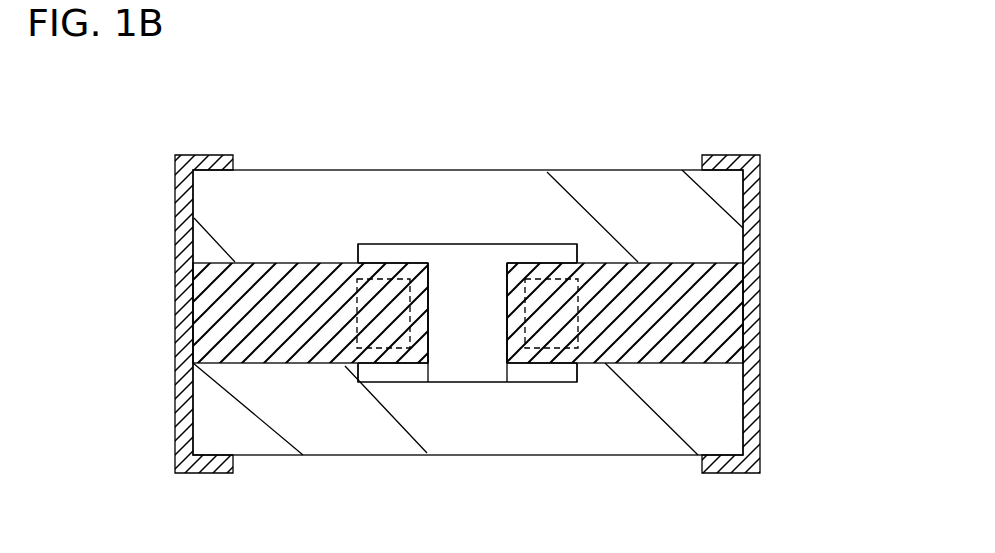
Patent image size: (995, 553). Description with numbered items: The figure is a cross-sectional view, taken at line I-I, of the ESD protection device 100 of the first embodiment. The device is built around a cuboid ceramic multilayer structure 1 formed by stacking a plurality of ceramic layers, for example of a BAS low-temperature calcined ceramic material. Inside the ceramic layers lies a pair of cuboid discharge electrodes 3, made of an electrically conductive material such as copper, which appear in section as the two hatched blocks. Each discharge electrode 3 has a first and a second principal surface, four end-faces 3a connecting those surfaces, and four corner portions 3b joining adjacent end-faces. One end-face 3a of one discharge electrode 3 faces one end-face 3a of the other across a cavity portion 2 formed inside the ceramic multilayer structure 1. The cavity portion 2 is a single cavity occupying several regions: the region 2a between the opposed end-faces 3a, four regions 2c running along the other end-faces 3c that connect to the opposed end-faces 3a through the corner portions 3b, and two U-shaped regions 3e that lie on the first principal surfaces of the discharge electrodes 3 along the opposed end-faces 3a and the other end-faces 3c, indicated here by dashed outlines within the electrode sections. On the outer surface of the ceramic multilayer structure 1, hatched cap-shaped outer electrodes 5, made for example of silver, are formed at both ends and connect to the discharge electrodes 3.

The ESD protection device 100 is at (80, 94).
The ceramic multilayer structure 1 is at (712, 190).
The cavity portion 2 is at (488, 257).
The region 2a is at (464, 307).
The regions 2c is at (383, 257).
The discharge electrode 3 is at (193, 302).
The end-face 3a is at (436, 345).
The corner portion 3b is at (487, 243).
The other end-face 3c is at (358, 245).
The region 3e is at (410, 308).
The outer electrode 5 is at (177, 432).